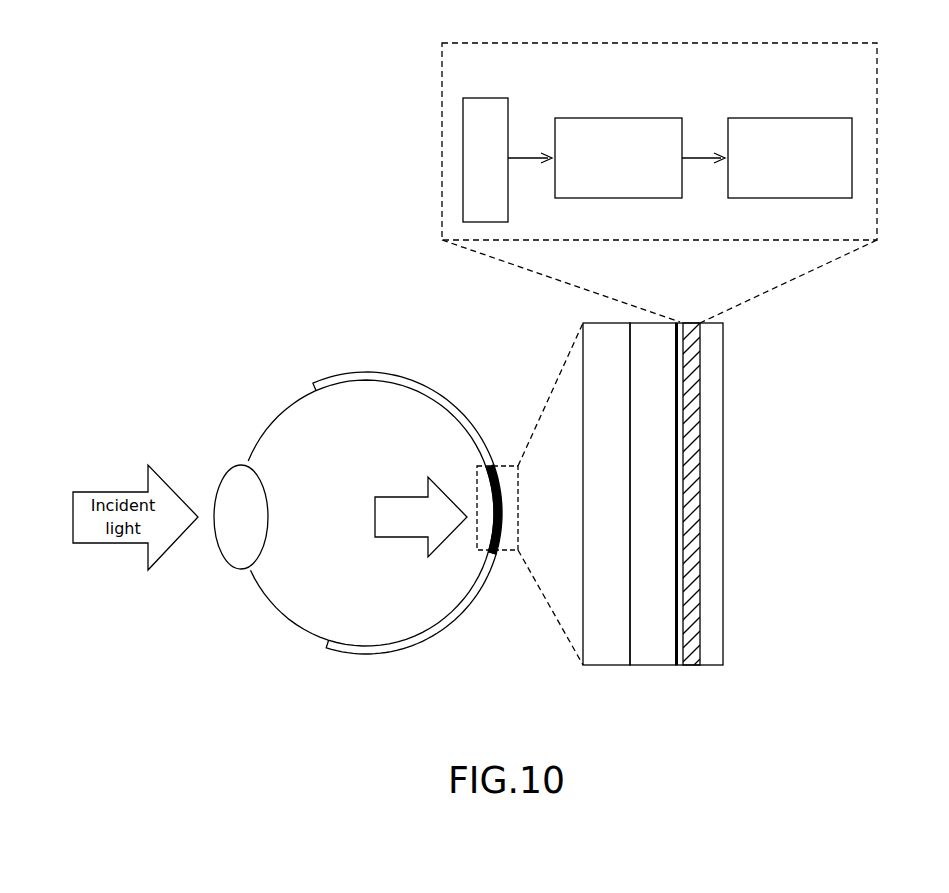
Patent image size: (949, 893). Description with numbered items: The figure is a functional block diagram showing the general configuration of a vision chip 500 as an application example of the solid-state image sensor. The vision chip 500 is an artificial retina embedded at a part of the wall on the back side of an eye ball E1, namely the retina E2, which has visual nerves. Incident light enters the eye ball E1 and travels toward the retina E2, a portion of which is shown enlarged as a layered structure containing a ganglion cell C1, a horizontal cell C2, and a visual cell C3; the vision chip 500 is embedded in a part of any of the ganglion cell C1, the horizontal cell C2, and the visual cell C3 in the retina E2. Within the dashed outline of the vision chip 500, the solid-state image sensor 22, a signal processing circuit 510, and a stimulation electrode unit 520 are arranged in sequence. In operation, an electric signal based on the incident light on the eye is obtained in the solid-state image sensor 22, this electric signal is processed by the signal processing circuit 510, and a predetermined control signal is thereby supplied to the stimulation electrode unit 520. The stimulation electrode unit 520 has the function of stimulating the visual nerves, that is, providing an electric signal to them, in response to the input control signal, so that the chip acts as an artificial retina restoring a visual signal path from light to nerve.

The solid-state image sensor 22 is at (488, 98).
The signal processing circuit 510 is at (619, 118).
The stimulation electrode unit 520 is at (790, 118).
The vision chip 500 is at (880, 135).
The ganglion cell C1 is at (608, 637).
The horizontal cell C2 is at (657, 640).
The visual cell C3 is at (723, 672).
The eye ball E1 is at (367, 418).
The retina E2 is at (411, 604).